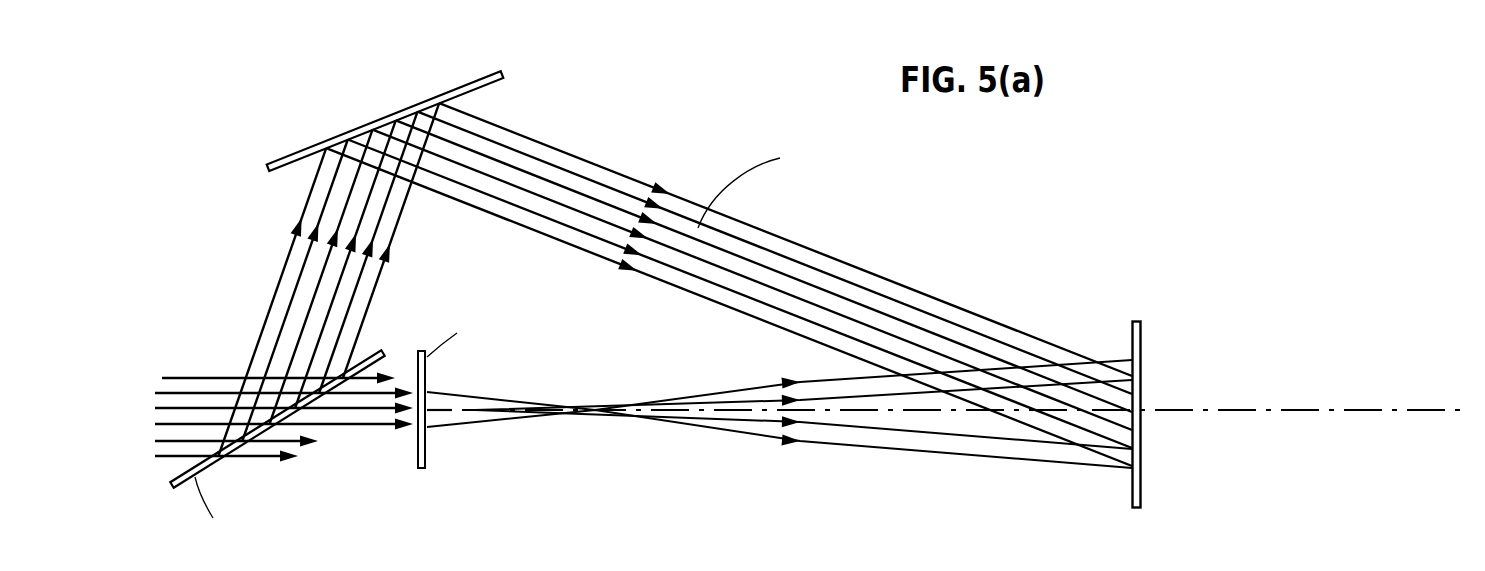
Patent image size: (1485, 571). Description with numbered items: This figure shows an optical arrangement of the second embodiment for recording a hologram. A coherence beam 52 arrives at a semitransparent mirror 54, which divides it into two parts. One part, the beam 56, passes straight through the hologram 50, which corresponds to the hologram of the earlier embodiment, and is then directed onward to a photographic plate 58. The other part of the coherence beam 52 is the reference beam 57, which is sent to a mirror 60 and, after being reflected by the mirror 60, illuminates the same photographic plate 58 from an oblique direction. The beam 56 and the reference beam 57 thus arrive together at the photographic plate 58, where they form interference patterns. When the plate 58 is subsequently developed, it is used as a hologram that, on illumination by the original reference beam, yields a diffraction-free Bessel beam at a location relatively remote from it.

The hologram 50 is at (427, 447).
The coherence beam 52 is at (190, 378).
The semitransparent mirror 54 is at (178, 488).
The beam 56 is at (363, 432).
The reference beam 57 is at (823, 282).
The photographic plate 58 is at (1140, 493).
The mirror 60 is at (486, 74).